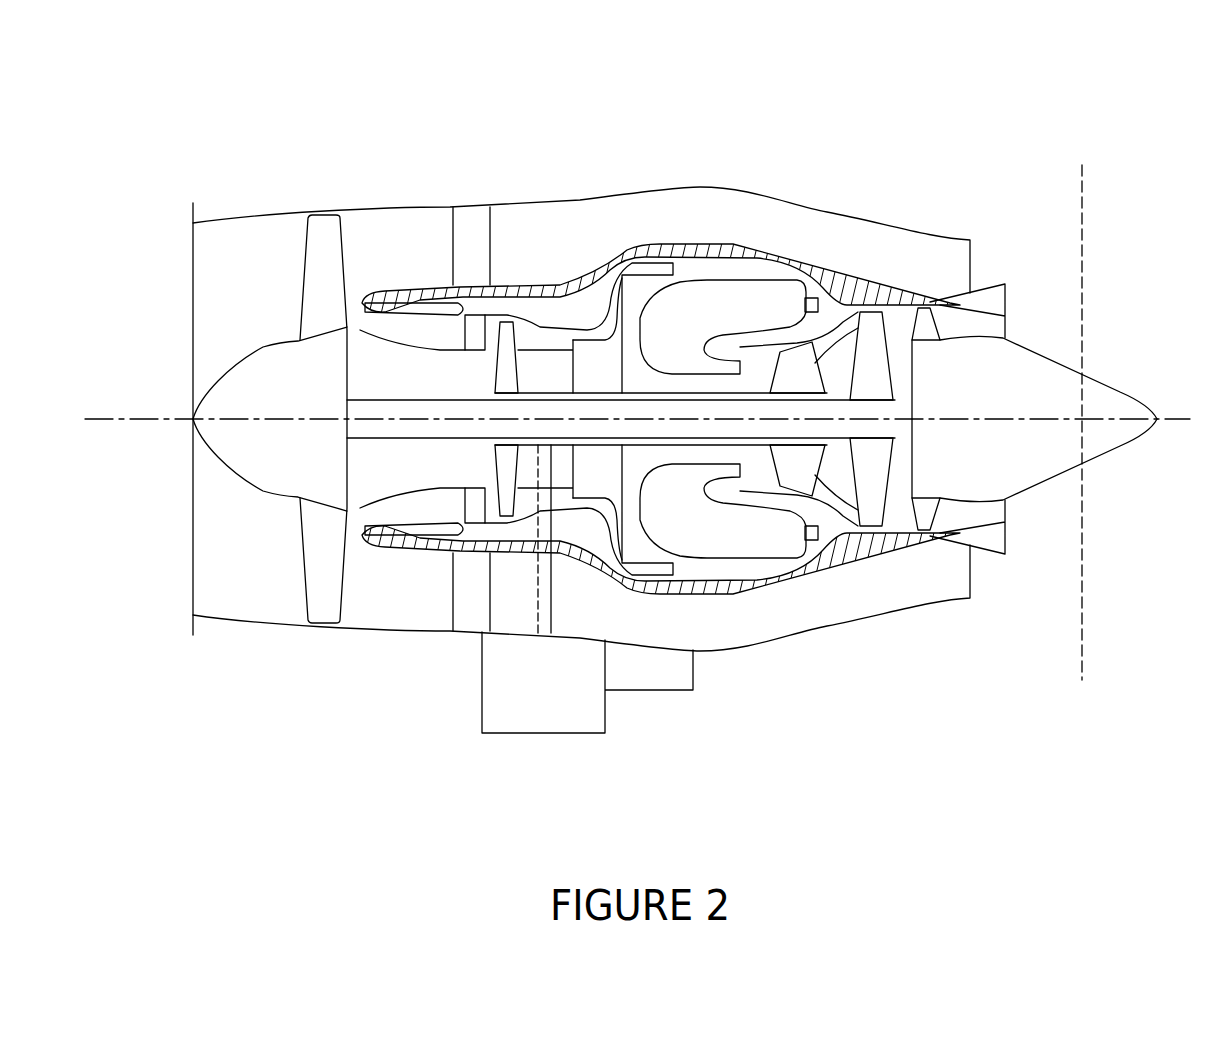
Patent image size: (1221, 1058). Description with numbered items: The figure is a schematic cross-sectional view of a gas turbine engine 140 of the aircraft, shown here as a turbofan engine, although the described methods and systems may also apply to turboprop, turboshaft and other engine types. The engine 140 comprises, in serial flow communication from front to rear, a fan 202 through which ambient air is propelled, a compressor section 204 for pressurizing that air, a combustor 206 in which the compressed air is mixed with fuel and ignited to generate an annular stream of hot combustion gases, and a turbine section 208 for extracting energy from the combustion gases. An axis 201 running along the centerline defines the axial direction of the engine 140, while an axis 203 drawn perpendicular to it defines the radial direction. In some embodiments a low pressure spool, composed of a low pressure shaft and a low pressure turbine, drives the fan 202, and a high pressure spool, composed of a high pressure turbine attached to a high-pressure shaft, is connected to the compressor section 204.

The gas turbine engine 140 is at (857, 141).
The axis 201 is at (1187, 418).
The fan 202 is at (318, 549).
The axis 203 is at (1082, 260).
The compressor section 204 is at (536, 333).
The combustor 206 is at (723, 300).
The turbine section 208 is at (836, 477).